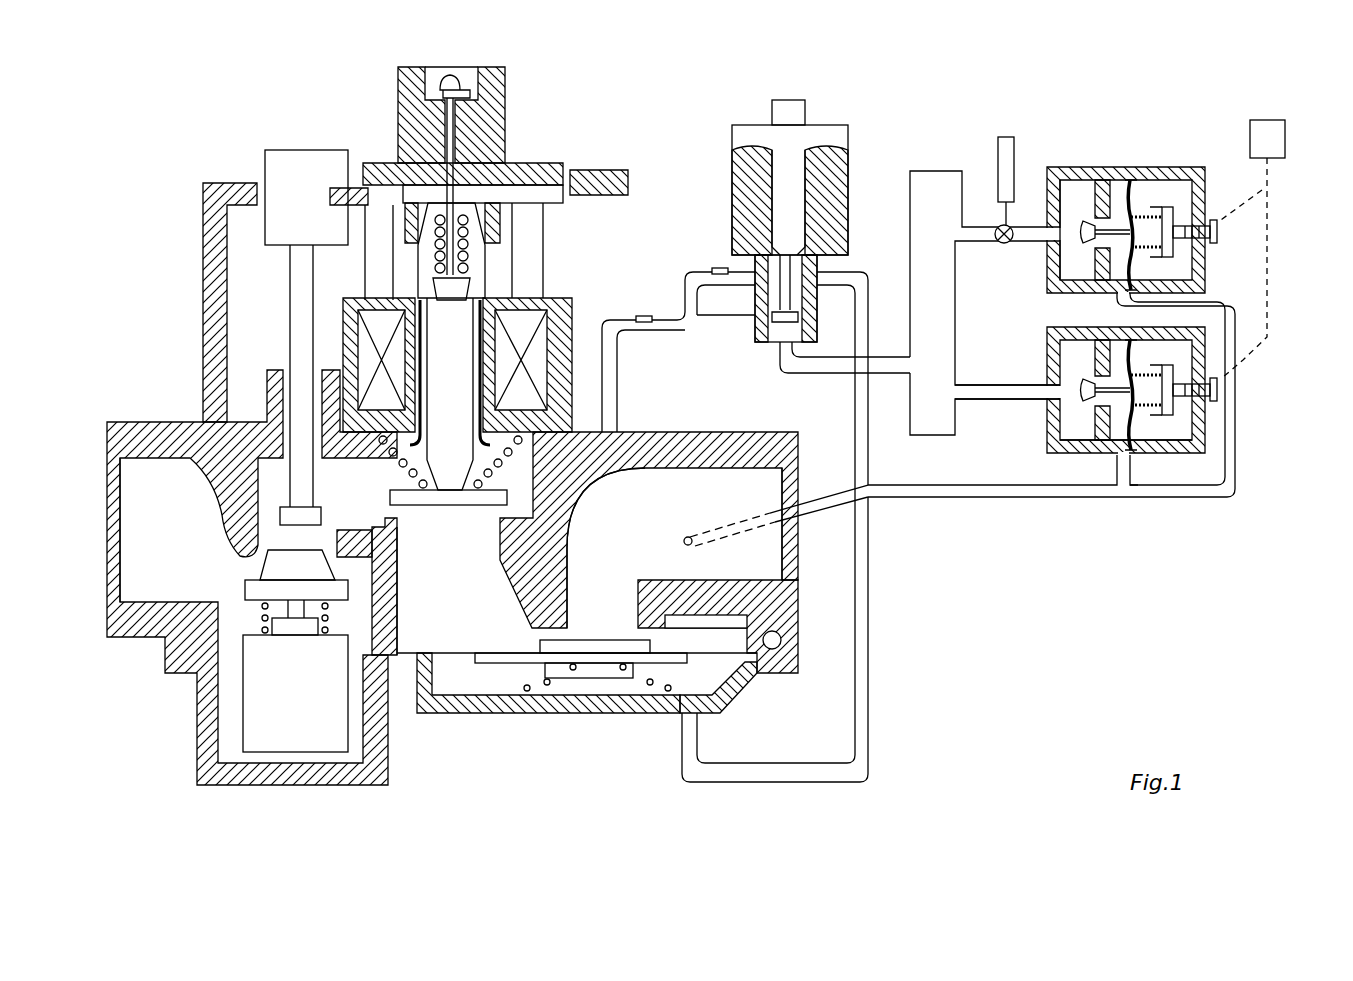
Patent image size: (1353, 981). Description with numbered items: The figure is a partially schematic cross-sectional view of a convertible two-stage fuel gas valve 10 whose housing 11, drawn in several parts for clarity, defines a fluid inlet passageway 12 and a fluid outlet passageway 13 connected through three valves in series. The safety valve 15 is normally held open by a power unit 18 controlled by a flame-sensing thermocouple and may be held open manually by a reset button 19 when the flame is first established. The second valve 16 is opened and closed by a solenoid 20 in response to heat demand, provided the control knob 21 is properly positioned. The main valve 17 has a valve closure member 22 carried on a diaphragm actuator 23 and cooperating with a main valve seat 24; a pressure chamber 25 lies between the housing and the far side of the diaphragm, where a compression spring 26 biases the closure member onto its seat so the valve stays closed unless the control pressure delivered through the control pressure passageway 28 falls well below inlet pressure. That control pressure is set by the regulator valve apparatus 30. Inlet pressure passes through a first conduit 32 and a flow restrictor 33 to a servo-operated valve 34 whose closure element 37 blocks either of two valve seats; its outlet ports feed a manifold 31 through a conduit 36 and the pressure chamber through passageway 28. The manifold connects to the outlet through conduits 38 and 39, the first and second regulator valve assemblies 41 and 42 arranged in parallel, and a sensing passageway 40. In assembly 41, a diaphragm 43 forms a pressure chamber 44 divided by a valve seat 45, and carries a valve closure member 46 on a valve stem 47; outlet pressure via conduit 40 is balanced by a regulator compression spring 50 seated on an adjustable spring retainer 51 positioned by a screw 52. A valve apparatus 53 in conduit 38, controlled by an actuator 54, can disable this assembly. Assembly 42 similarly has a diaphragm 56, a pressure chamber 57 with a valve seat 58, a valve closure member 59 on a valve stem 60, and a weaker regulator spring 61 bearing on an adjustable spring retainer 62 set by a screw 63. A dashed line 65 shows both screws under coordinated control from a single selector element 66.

The fuel gas valve 10 is at (533, 436).
The housing 11 is at (176, 421).
The fluid inlet passageway 12 is at (183, 540).
The fluid outlet passageway 13 is at (745, 555).
The safety valve 15 is at (252, 576).
The solenoid-controlled valve 16 is at (411, 548).
The main valve 17 is at (586, 627).
The power unit 18 is at (270, 715).
The reset button 19 is at (266, 160).
The solenoid 20 is at (345, 330).
The control knob 21 is at (505, 120).
The valve closure member 22 is at (655, 680).
The diaphragm actuator 23 is at (772, 640).
The main valve seat 24 is at (478, 665).
The pressure chamber 25 is at (738, 692).
The compression spring 26 is at (560, 695).
The control pressure passageway 28 is at (868, 642).
The regulator valve apparatus 30 is at (1110, 323).
The manifold 31 is at (908, 238).
The first conduit 32 is at (690, 323).
The flow restrictor 33 is at (634, 325).
The valve 34 is at (766, 342).
The conduit 36 is at (838, 374).
The closure element 37 is at (792, 326).
The conduit 38 is at (968, 246).
The conduit 39 is at (1013, 399).
The sensing passageway 40 is at (985, 498).
The first regulator valve assembly 41 is at (1136, 177).
The second regulator valve assembly 42 is at (1204, 500).
The diaphragm 43 is at (1135, 176).
The pressure chamber 44 is at (1103, 182).
The valve seat 45 is at (1087, 262).
The valve closure member 46 is at (1062, 170).
The valve stem 47 is at (1134, 214).
The regulator compression spring 50 is at (1172, 254).
The adjustable spring retainer 51 is at (1178, 212).
The screw 52 is at (1217, 233).
The valve apparatus 53 is at (1000, 226).
The actuator 54 is at (1005, 135).
The diaphragm 56 is at (1158, 432).
The pressure chamber 57 is at (1098, 462).
The valve seat 58 is at (1072, 438).
The valve closure member 59 is at (1090, 388).
The valve stem 60 is at (1094, 376).
The regulator spring 61 is at (1174, 404).
The adjustable spring retainer 62 is at (1212, 398).
The screw 63 is at (1218, 392).
The dashed line 65 is at (1268, 345).
The selector element 66 is at (1274, 158).